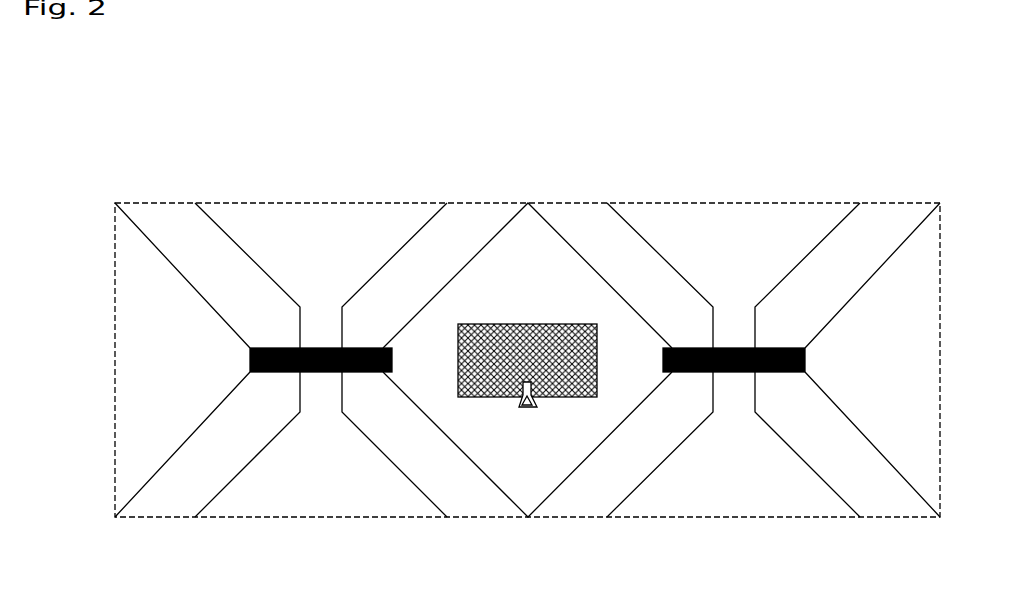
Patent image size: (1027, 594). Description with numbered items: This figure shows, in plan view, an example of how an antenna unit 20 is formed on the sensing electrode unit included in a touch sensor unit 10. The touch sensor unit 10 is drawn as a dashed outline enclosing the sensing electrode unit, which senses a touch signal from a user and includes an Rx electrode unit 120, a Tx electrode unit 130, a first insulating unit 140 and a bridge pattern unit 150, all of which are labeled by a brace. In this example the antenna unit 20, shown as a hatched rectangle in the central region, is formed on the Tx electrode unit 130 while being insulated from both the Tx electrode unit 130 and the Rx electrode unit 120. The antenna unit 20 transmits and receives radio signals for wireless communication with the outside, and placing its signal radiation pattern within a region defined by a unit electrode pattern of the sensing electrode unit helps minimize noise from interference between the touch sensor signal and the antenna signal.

The touch sensor unit 10 is at (607, 98).
The Rx electrode unit 120 is at (348, 227).
The bridge pattern unit 150 is at (362, 348).
The first insulating unit 140 is at (493, 222).
The Tx electrode unit 130 is at (552, 263).
The antenna unit 20 is at (578, 397).